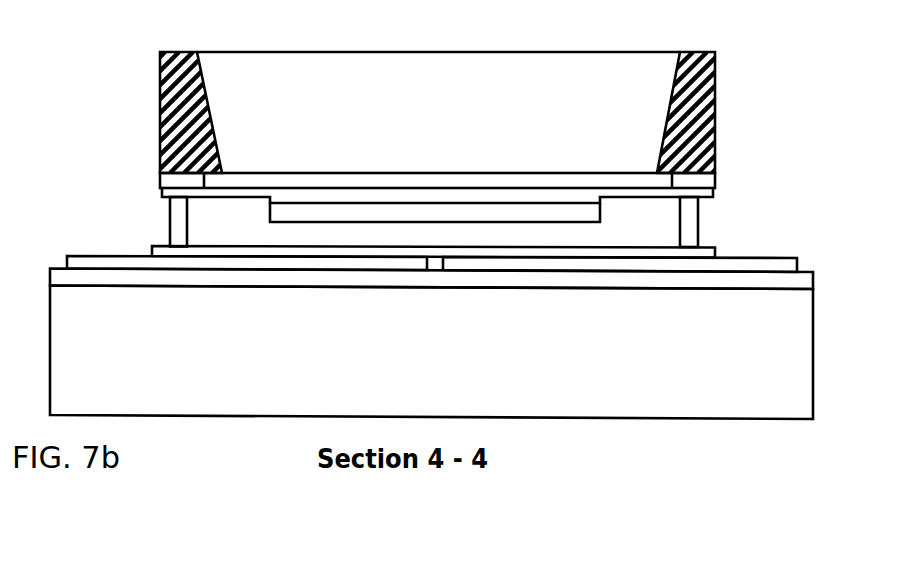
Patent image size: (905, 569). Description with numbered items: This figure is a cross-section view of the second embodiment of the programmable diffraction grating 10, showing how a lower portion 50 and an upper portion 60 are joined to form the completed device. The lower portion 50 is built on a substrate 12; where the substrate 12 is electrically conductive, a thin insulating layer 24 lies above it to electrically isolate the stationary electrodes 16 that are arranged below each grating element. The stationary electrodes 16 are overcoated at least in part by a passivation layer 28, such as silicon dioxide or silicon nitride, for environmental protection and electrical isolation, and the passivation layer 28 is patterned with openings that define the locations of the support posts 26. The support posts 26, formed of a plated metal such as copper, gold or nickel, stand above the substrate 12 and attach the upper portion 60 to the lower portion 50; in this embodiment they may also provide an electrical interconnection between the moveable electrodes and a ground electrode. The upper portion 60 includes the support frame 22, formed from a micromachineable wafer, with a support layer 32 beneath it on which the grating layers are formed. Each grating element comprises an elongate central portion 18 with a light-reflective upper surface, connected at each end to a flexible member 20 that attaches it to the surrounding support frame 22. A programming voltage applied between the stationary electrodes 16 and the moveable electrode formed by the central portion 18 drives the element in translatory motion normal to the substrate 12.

The programmable diffraction grating 10 is at (700, 457).
The substrate 12 is at (795, 355).
The stationary electrode 16 is at (113, 254).
The elongate central portion 18 is at (285, 198).
The flexible member 20 is at (228, 193).
The support frame 22 is at (715, 125).
The insulating layer 24 is at (795, 282).
The support post 26 is at (698, 223).
The passivation layer 28 is at (157, 246).
The support layer 32 is at (705, 184).
The lower portion 50 is at (847, 215).
The upper portion 60 is at (787, 53).